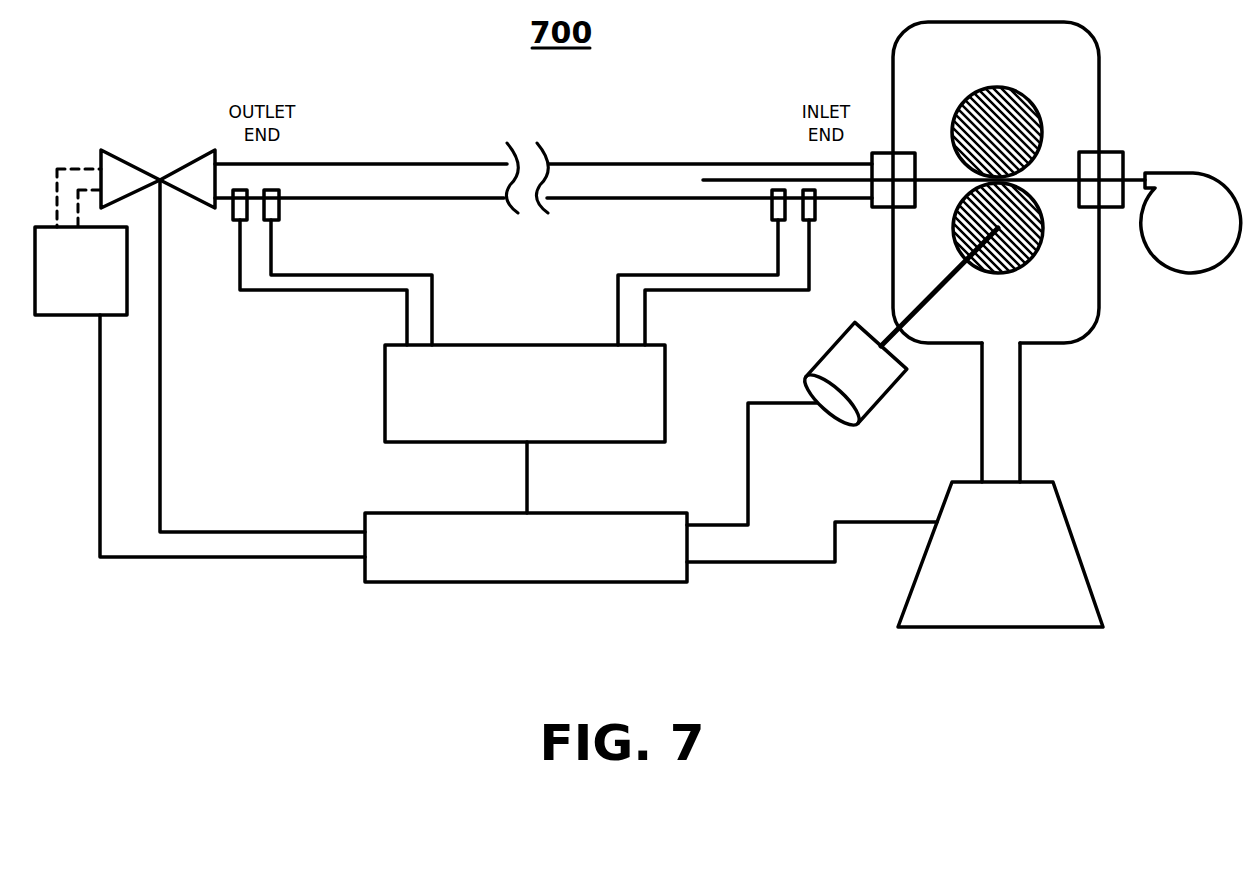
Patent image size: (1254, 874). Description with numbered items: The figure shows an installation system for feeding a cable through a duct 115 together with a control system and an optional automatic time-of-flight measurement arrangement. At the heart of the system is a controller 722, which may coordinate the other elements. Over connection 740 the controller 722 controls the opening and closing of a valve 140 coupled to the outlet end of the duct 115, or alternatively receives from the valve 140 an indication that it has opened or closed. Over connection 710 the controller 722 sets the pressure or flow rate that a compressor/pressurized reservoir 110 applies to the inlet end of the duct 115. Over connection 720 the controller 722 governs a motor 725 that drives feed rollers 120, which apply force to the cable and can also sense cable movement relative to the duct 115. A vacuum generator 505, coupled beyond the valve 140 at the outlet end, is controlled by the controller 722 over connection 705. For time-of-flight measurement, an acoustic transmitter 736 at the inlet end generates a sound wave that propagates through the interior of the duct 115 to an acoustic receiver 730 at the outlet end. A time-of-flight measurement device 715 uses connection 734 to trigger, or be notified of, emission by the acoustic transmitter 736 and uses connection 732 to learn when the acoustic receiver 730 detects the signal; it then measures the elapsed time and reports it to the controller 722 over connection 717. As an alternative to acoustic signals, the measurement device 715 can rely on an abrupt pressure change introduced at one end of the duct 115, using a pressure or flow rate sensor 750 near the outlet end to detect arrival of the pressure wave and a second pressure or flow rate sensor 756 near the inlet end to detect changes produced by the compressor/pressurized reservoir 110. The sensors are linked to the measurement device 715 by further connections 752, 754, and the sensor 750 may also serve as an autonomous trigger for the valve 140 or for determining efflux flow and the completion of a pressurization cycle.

The compressor/pressurized reservoir 110 is at (1027, 575).
The duct 115 is at (387, 163).
The feed rollers 120 is at (984, 89).
The valve 140 is at (183, 161).
The vacuum generator 505 is at (62, 316).
The connection 705 is at (100, 480).
The connection 710 is at (855, 521).
The time-of-flight measurement device 715 is at (385, 385).
The connection 717 is at (527, 470).
The connection 720 is at (748, 453).
The controller 722 is at (367, 513).
The motor 725 is at (812, 375).
The acoustic receiver 730 is at (280, 207).
The connection 732 is at (432, 280).
The connection 734 is at (618, 287).
The acoustic transmitter 736 is at (772, 210).
The connection 740 is at (185, 532).
The pressure or flow rate sensor 750 is at (235, 222).
The outlet sensor signal line 752 is at (290, 290).
The inlet sensor signal line 754 is at (645, 307).
The pressure or flow rate sensor 756 is at (815, 218).